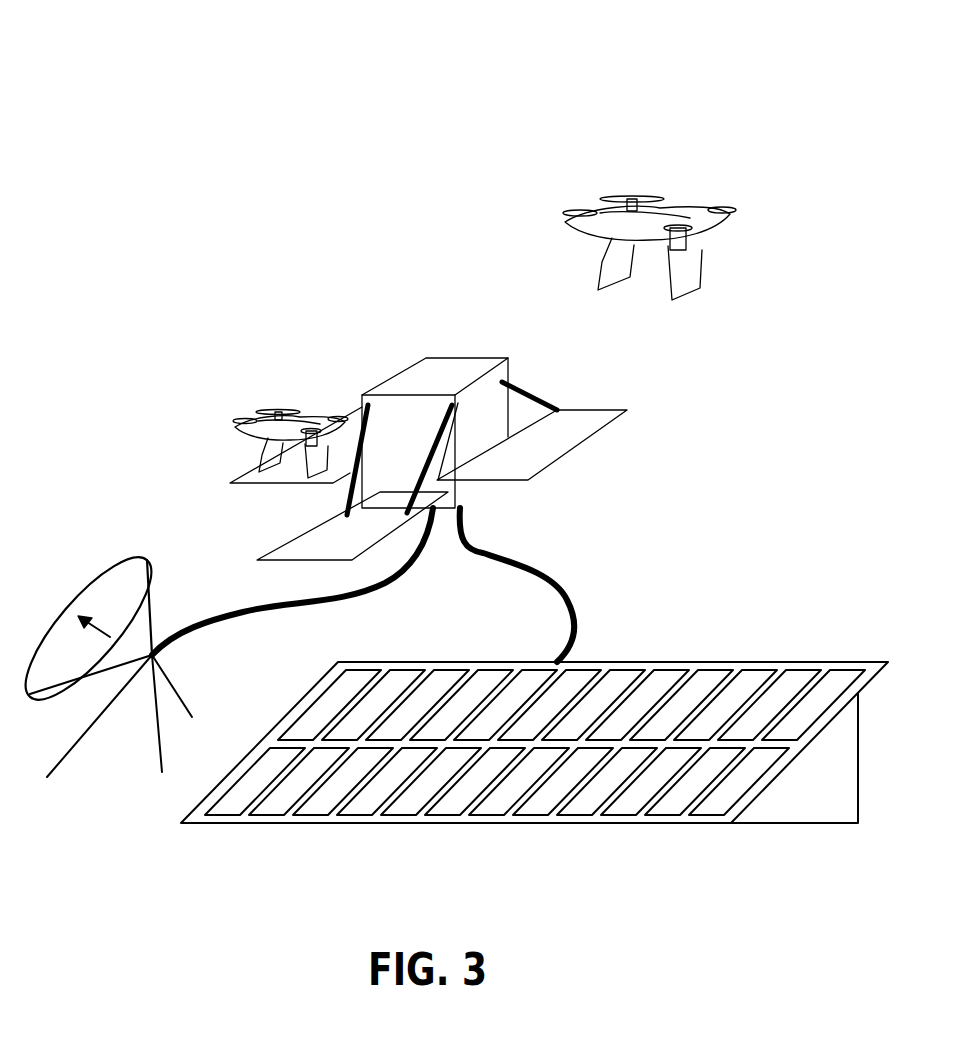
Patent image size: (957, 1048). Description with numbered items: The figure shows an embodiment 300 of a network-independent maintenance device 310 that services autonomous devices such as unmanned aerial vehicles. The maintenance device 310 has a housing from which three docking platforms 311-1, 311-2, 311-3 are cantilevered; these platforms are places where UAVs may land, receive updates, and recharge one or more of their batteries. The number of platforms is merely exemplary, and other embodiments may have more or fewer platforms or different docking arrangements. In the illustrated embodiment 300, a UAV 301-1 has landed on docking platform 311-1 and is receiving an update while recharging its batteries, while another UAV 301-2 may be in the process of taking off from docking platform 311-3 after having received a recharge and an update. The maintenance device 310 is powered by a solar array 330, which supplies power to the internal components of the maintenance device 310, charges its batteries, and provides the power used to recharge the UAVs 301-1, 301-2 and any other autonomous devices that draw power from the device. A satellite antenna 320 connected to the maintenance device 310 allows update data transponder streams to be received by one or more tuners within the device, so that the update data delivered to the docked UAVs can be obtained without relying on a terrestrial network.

The embodiment of a network-independent maintenance device 300 is at (825, 70).
The UAV 301-1 is at (268, 412).
The UAV 301-2 is at (680, 210).
The network-independent maintenance device 310 is at (508, 358).
The docking platform 311-1 is at (230, 483).
The docking platform 311-2 is at (610, 410).
The docking platform 311-3 is at (257, 560).
The satellite antenna 320 is at (147, 562).
The solar array 330 is at (855, 662).